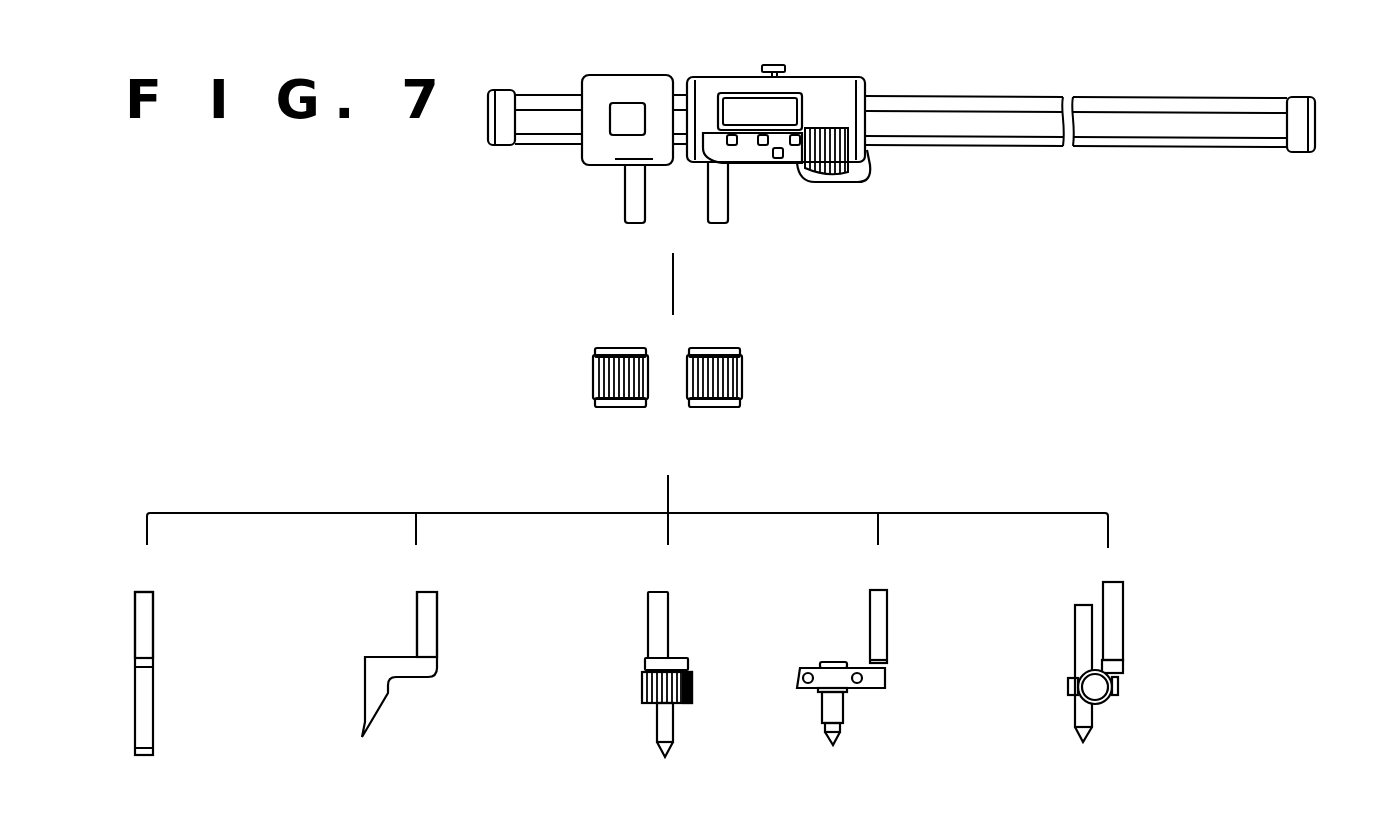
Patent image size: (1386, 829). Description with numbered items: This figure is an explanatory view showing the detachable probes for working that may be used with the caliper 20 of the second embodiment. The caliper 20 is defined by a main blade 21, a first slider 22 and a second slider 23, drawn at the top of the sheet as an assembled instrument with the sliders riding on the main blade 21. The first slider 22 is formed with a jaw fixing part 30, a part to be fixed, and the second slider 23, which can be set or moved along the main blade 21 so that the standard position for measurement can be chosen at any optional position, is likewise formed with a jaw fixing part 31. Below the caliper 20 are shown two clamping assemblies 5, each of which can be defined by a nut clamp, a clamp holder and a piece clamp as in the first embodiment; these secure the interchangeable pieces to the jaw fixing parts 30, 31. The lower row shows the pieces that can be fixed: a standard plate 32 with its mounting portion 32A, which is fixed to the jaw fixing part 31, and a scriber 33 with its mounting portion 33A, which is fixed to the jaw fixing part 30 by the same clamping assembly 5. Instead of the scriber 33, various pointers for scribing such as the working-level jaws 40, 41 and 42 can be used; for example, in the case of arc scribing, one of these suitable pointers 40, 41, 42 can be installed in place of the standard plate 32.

The caliper 20 is at (1197, 103).
The main blade 21 is at (980, 103).
The first slider 22 is at (843, 82).
The second slider 23 is at (622, 78).
The jaw fixing part 30 is at (722, 202).
The jaw fixing part 31 is at (633, 203).
The clamping assembly 5 is at (600, 375).
The standard plate 32 is at (148, 700).
The mounting portion of flat attachment 32A is at (148, 623).
The scriber 33 is at (380, 693).
The mounting portion of hook attachment 33A is at (437, 628).
The working-level jaw 40 is at (665, 725).
The working-level jaw 41 is at (835, 712).
The working-level jaw 42 is at (1085, 718).